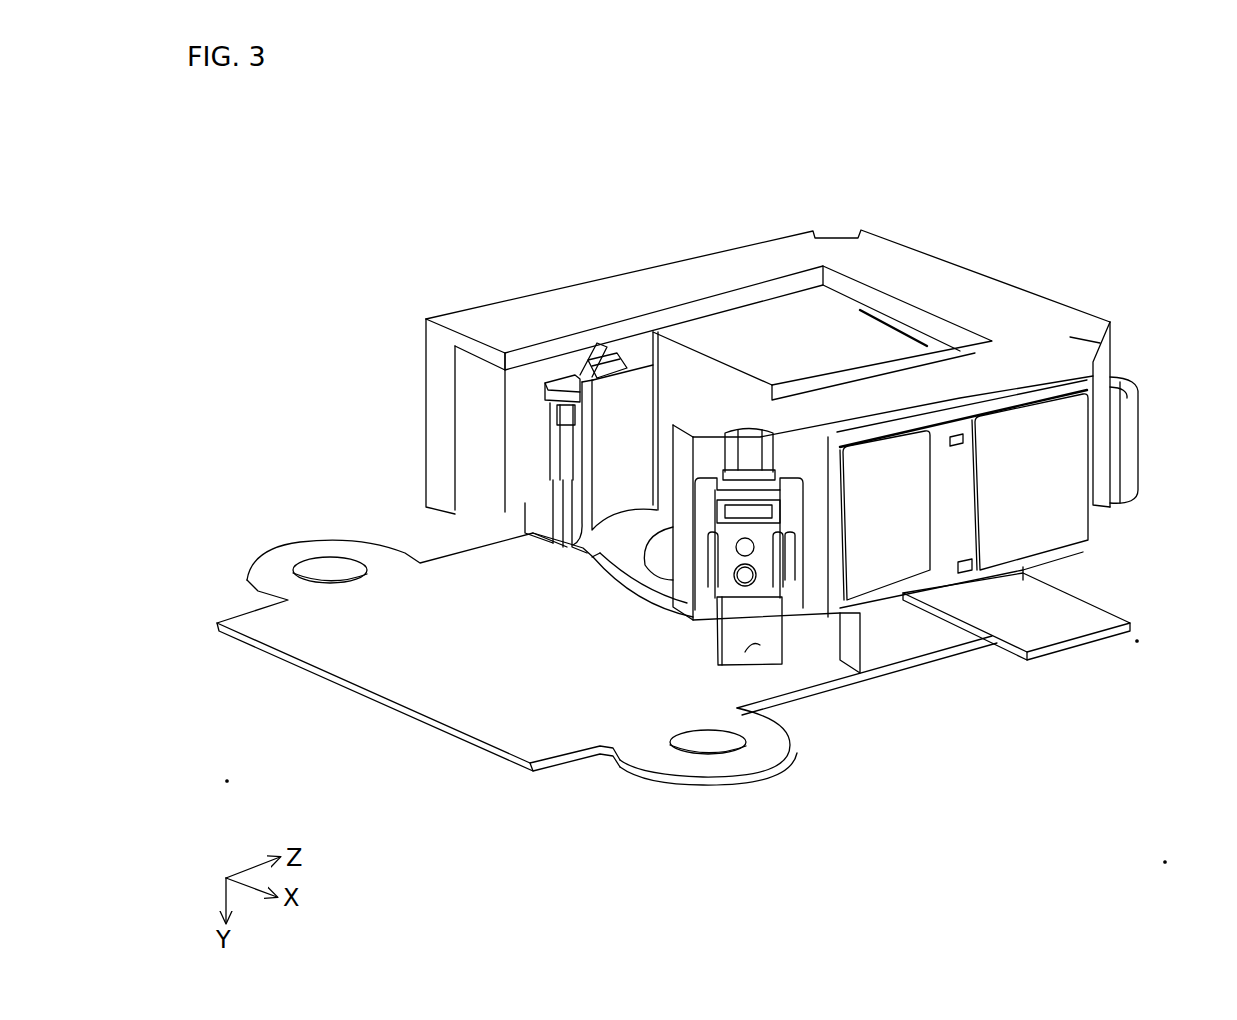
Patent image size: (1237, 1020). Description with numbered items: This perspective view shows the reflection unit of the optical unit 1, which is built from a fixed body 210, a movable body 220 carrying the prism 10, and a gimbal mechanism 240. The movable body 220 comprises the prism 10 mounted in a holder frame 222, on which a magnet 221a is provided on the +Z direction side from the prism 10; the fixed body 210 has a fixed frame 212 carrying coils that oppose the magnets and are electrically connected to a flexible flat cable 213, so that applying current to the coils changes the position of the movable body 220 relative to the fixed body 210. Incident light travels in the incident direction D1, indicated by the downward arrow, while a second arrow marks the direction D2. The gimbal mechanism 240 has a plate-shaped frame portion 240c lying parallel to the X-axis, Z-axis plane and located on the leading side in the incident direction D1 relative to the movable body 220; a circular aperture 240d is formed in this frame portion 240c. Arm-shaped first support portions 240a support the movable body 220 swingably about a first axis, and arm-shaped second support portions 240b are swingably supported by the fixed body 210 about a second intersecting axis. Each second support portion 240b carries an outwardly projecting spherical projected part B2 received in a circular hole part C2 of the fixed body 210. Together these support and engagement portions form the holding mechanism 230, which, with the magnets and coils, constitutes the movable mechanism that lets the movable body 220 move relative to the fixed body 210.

The optical unit 1 is at (1100, 277).
The prism 10 is at (860, 327).
The fixed body 210 is at (657, 266).
The fixed frame 212 is at (1070, 337).
The flexible flat cable 213 is at (1133, 420).
The movable body 220 is at (633, 343).
The magnet 221a is at (925, 345).
The holder frame 222 is at (612, 355).
The holding mechanism 230 is at (537, 402).
The gimbal mechanism 240 is at (637, 588).
The first support portion 240a is at (567, 547).
The second support portion 240b is at (757, 640).
The frame portion 240c is at (592, 557).
The aperture 240d is at (677, 558).
The spherical projected part B2 is at (721, 600).
The circular hole part C2 is at (757, 553).
The incident direction D1 is at (790, 335).
The direction D2 is at (670, 452).